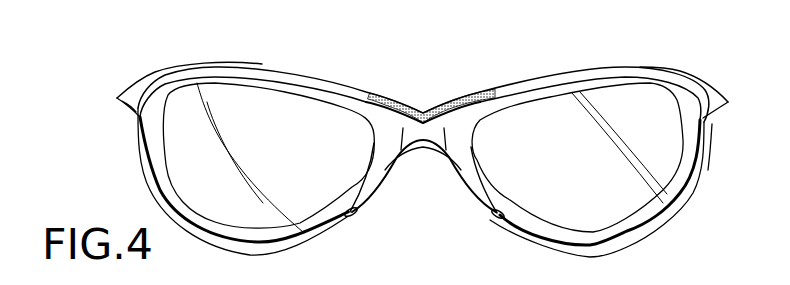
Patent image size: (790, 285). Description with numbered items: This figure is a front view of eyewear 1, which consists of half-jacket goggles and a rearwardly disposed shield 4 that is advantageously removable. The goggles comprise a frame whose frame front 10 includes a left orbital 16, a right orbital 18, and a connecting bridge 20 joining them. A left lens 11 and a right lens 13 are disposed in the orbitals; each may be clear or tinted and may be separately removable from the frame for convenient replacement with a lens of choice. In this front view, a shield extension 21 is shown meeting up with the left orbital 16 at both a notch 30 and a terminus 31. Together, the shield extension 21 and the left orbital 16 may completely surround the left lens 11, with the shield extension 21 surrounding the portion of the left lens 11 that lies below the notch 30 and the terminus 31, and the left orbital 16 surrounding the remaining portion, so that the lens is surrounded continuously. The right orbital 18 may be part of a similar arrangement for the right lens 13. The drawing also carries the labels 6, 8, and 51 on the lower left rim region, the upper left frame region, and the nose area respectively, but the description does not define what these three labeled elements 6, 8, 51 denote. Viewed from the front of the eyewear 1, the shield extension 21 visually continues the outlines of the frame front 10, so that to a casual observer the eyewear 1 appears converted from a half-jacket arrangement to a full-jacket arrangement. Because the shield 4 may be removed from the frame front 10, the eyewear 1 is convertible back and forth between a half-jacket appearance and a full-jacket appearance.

The eyewear 1 is at (88, 91).
The shield 4 is at (697, 208).
The left rim 6 is at (151, 183).
The lens retaining groove 8 is at (155, 108).
The frame front 10 is at (710, 93).
The left lens 11 is at (275, 162).
The right lens 13 is at (603, 164).
The left orbital 16 is at (253, 72).
The right orbital 18 is at (560, 82).
The connecting bridge 20 is at (423, 122).
The shield extension 21 is at (193, 227).
The notch 30 is at (128, 113).
The terminus 31 is at (357, 211).
The nose piece 51 is at (423, 206).